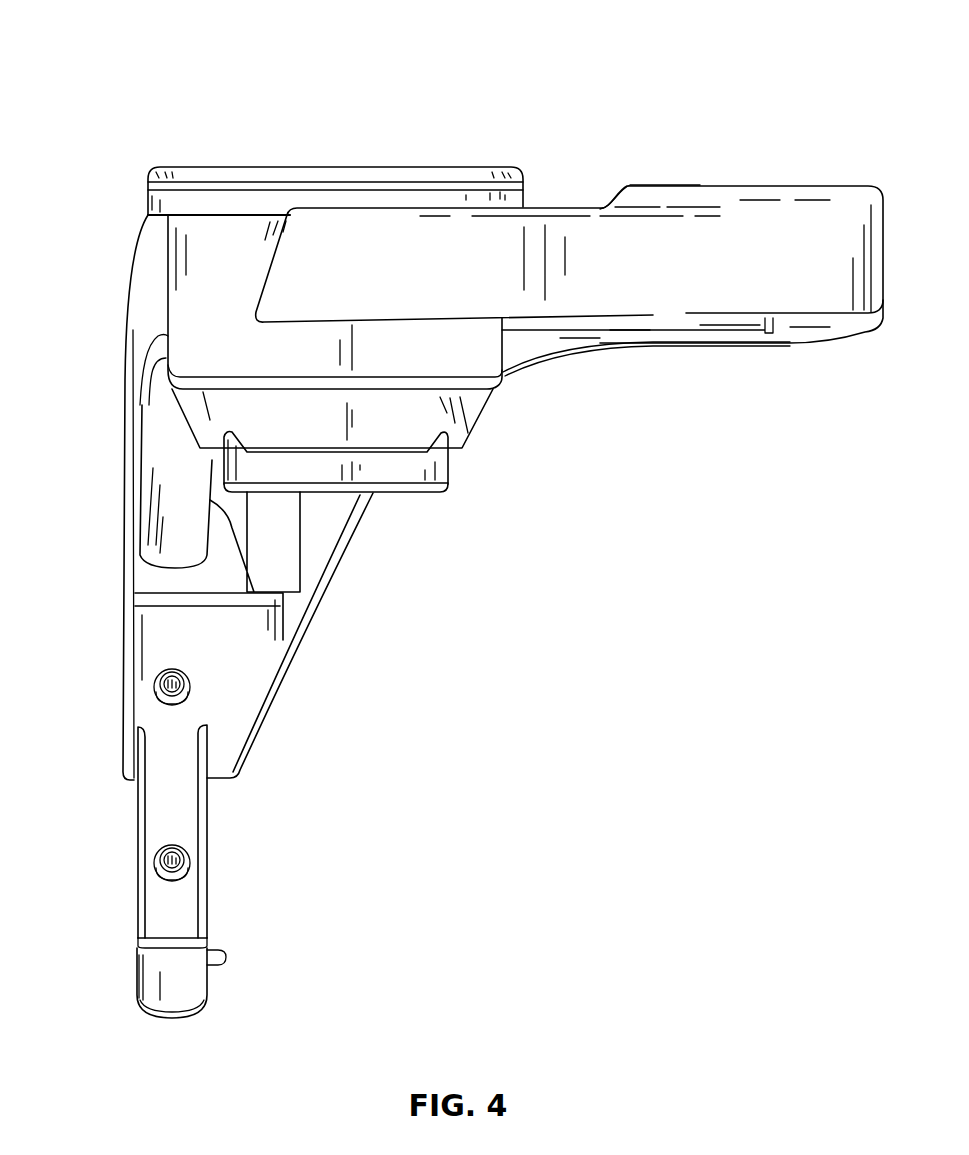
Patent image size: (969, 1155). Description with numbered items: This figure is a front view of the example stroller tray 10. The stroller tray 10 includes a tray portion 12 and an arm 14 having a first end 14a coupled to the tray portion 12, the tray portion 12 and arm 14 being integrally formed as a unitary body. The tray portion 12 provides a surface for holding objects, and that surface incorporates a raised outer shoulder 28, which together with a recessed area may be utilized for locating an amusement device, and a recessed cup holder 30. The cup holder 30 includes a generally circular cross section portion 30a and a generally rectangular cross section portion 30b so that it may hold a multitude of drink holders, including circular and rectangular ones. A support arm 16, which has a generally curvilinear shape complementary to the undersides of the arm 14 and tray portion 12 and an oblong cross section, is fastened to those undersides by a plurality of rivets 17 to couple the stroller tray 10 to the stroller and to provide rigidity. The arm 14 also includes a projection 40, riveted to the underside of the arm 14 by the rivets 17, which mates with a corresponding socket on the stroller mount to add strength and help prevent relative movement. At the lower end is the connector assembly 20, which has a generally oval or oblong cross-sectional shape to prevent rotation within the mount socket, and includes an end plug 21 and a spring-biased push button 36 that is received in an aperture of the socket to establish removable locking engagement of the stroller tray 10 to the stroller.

The stroller tray 10 is at (549, 62).
The tray portion 12 is at (816, 294).
The raised outer shoulder 28 is at (643, 183).
The recessed cup holder 30 is at (422, 497).
The generally circular cross section portion 30a is at (470, 408).
The generally rectangular cross section portion 30b is at (403, 488).
The arm 14 is at (268, 730).
The first end 14a is at (125, 427).
The rivets 17 is at (156, 690).
The projection 40 is at (182, 792).
The spring-biased push button 36 is at (228, 957).
The support arm 16 is at (193, 983).
The connector assembly 20 is at (133, 985).
The end plug 21 is at (175, 1018).